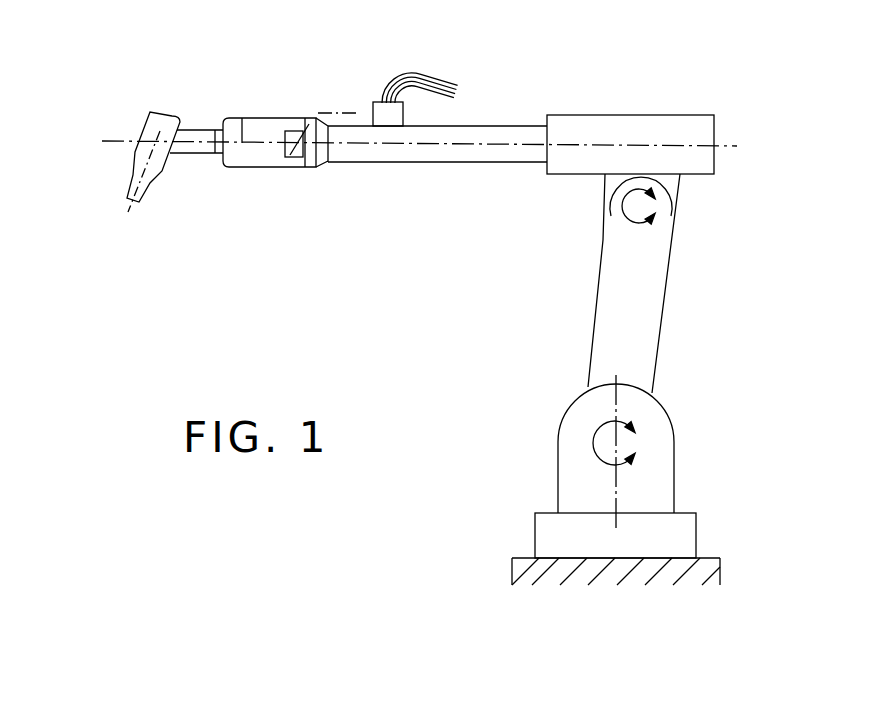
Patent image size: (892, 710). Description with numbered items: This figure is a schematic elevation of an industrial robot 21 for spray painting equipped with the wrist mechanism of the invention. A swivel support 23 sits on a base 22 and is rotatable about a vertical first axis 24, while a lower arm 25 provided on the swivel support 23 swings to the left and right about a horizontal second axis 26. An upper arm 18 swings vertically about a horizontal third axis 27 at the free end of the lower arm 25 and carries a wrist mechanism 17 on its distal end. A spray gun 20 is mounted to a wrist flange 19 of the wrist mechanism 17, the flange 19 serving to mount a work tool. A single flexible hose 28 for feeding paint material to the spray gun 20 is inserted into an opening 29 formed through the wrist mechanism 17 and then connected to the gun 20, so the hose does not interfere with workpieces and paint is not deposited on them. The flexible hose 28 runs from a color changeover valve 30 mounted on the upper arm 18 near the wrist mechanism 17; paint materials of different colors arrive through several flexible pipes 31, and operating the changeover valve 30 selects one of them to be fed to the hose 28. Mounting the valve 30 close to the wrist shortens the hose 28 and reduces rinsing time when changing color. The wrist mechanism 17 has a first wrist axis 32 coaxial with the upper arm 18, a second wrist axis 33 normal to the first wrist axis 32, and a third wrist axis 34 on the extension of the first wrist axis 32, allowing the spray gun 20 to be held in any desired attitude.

The wrist mechanism 17 is at (267, 126).
The upper arm 18 is at (500, 127).
The wrist flange 19 is at (218, 152).
The spray gun 20 is at (153, 118).
The industrial robot 21 is at (638, 82).
The base 22 is at (542, 528).
The swivel support 23 is at (568, 440).
The first axis 24 is at (618, 503).
The lower arm 25 is at (608, 272).
The second axis 26 is at (615, 443).
The third axis 27 is at (632, 203).
The flexible hose 28 is at (328, 112).
The opening 29 is at (293, 155).
The color changeover valve 30 is at (373, 106).
The flexible pipes 31 is at (432, 79).
The first wrist axis 32 is at (352, 152).
The second wrist axis 33 is at (240, 113).
The third wrist axis 34 is at (118, 140).